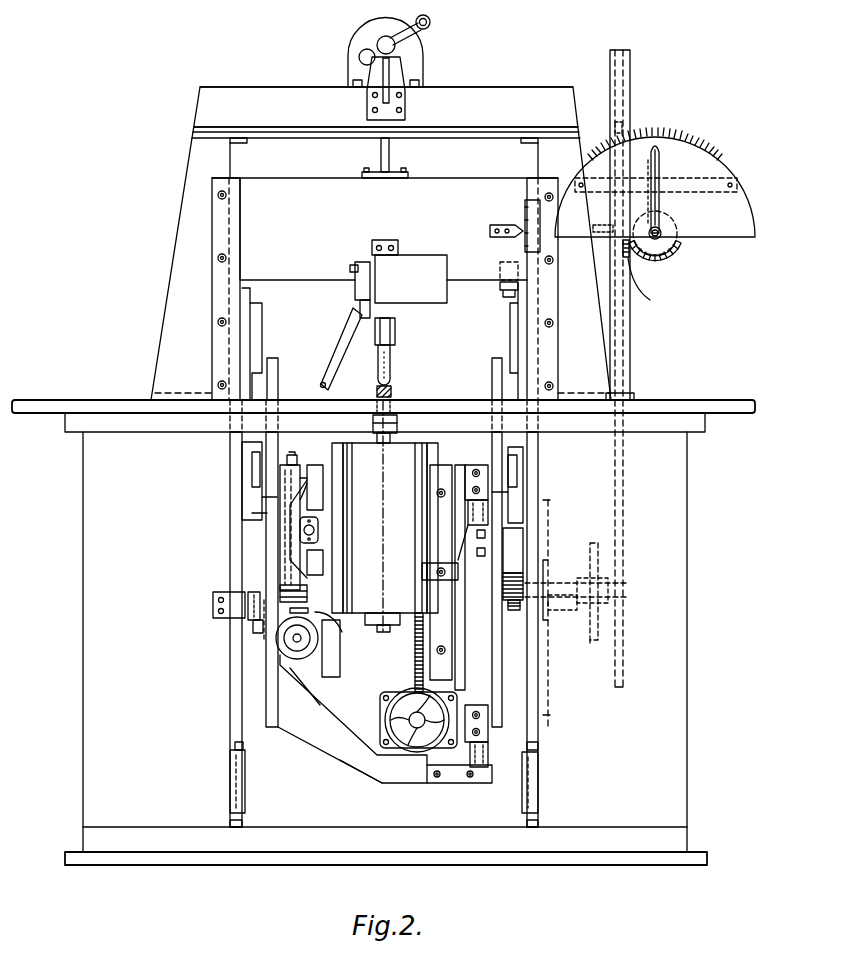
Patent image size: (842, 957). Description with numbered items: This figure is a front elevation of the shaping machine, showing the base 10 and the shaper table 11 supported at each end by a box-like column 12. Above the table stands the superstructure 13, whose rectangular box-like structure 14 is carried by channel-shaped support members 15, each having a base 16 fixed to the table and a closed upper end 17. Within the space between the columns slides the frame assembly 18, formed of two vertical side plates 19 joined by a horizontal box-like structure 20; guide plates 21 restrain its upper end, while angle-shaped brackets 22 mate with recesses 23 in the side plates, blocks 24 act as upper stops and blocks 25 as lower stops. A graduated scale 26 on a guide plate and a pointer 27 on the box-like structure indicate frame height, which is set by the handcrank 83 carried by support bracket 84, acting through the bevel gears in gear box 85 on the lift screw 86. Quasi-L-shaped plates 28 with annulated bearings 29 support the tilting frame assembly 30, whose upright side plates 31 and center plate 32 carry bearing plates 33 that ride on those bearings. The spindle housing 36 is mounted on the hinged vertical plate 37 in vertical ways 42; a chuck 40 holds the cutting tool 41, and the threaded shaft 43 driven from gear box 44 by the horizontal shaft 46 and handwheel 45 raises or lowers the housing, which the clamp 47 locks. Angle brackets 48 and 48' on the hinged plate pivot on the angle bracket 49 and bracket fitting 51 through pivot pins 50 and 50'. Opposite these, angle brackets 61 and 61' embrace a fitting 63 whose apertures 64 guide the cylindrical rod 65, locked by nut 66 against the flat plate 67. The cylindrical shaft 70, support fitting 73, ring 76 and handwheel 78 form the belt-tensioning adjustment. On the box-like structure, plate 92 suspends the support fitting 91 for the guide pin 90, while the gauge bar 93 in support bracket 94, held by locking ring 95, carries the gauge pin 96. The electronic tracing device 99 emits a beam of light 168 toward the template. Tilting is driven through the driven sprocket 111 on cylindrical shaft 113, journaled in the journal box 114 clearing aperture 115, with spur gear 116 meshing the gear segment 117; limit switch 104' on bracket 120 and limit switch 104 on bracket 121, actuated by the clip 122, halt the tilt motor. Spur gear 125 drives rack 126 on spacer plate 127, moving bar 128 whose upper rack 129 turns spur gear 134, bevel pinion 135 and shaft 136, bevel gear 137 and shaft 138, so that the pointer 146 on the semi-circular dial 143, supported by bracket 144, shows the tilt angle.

The base 10 is at (335, 847).
The shaper table 11 is at (90, 400).
The box-like supporting structure or column 12 is at (106, 789).
The superstructure 13 is at (181, 111).
The rectangular box-like structure 14 is at (260, 111).
The vertical channel-shaped column or support member 15 is at (173, 364).
The base 16 is at (155, 397).
The closed upper end 17 is at (574, 138).
The frame assembly 18 is at (326, 180).
The vertical side plate 19 is at (527, 725).
The horizontal rectangular box-like structure 20 is at (260, 204).
The guide plate 21 is at (558, 297).
The angle-shaped bracket 22 is at (510, 804).
The recess 23 is at (540, 746).
The block 24 is at (522, 142).
The block 25 is at (540, 823).
The graduated scale 26 is at (525, 205).
The pointer 27 is at (500, 230).
The quasi-L-shaped plate 28 is at (523, 478).
The annulated outwardly depending bearing 29 is at (510, 315).
The tilting frame assembly 30 is at (320, 762).
The upright side plate 31 is at (494, 433).
The vertically disposed center plate 32 is at (366, 779).
The bearing plate 33 is at (497, 360).
The spindle housing 36 is at (393, 485).
The hinged vertical plate 37 is at (365, 696).
The chuck 40 is at (397, 425).
The cutting or milling tool 41 is at (392, 392).
The vertical ways 42 is at (433, 637).
The externally threaded vertical shaft 43 is at (415, 639).
The gear box 44 is at (386, 692).
The handwheel 45 is at (388, 718).
The horizontal shaft 46 is at (412, 742).
The clamp 47 is at (422, 571).
The angle bracket 48 is at (476, 470).
The angle bracket 48' is at (476, 705).
The angle bracket 49 is at (484, 560).
The pivot pin 50 is at (461, 520).
The pivotal pin 50' is at (493, 758).
The bracket fitting 51 is at (442, 784).
The angle bracket 61 is at (317, 470).
The angle bracket 61' is at (343, 559).
The fitting 63 is at (280, 545).
The aperture 64 is at (307, 478).
The cylindrical rod 65 is at (302, 500).
The nut 66 is at (292, 455).
The flat plate 67 is at (308, 598).
The cylindrical shaft 70 is at (293, 640).
The support fitting 73 is at (340, 642).
The ring 76 is at (342, 627).
The handwheel 78 is at (297, 660).
The handcrank 83 is at (431, 20).
The support bracket 84 is at (406, 105).
The gear box 85 is at (348, 66).
The lift screw or shaft 86 is at (389, 152).
The guide pin 90 is at (378, 372).
The support fitting 91 is at (377, 338).
The plate 92 is at (378, 240).
The gauge bar 93 is at (342, 345).
The support bracket 94 is at (355, 293).
The locking ring 95 is at (350, 268).
The gauge pin 96 is at (329, 388).
The electronic tracing device 99 is at (420, 290).
The limit switch 104 is at (255, 603).
The limit switch 104' is at (485, 292).
The driven sprocket 111 is at (590, 641).
The cylindrical shaft 113 is at (583, 575).
The bearing or journal box 114 is at (572, 612).
The aperture 115 is at (551, 517).
The spur gear 116 is at (511, 612).
The gear segment 117 is at (506, 566).
The bracket 120 is at (504, 263).
The bracket 121 is at (213, 601).
The angle bracket or clip 122 is at (255, 628).
The spur gear 125 is at (628, 584).
The rack 126 is at (625, 616).
The spacer plate 127 is at (624, 662).
The link or bar 128 is at (631, 365).
The upper rack 129 is at (633, 292).
The spur gear 134 is at (630, 262).
The bevel pinion 135 is at (650, 258).
The shaft 136 is at (594, 228).
The bevel gear 137 is at (676, 250).
The cylindrical shaft 138 is at (661, 233).
The semi-circular dial 143 is at (705, 139).
The bracket 144 is at (651, 197).
The pointer or indicator 146 is at (662, 155).
The beam of light 168 is at (391, 365).